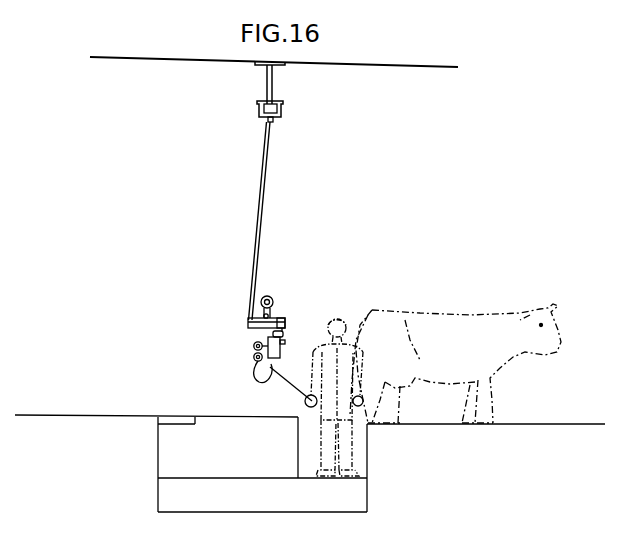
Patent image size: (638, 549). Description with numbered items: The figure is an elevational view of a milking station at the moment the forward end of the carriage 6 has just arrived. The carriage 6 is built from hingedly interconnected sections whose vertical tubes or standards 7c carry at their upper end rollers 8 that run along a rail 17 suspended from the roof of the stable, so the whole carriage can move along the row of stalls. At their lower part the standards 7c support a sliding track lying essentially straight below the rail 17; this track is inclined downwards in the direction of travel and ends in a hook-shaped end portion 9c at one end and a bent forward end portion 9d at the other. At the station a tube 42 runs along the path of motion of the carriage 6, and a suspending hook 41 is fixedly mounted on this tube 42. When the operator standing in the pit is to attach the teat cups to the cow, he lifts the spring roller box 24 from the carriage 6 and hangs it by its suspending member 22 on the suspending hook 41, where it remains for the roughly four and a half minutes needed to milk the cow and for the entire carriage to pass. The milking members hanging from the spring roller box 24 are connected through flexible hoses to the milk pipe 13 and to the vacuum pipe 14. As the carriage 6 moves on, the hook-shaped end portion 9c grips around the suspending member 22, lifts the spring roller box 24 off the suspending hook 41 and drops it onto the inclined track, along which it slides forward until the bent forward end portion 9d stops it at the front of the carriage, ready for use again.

The rail 17 is at (268, 87).
The rollers 8 is at (276, 106).
The carriage 6 is at (271, 221).
The vertical tubes or standards 7c is at (262, 215).
The tube 42 is at (269, 296).
The hook-shaped end portion 9c is at (278, 319).
The bent forward end portion 9d is at (283, 325).
The suspending hook 41 is at (263, 316).
The suspending member 22 is at (283, 336).
The spring roller box 24 is at (280, 351).
The milk pipe 13 is at (254, 346).
The vacuum pipe 14 is at (255, 361).